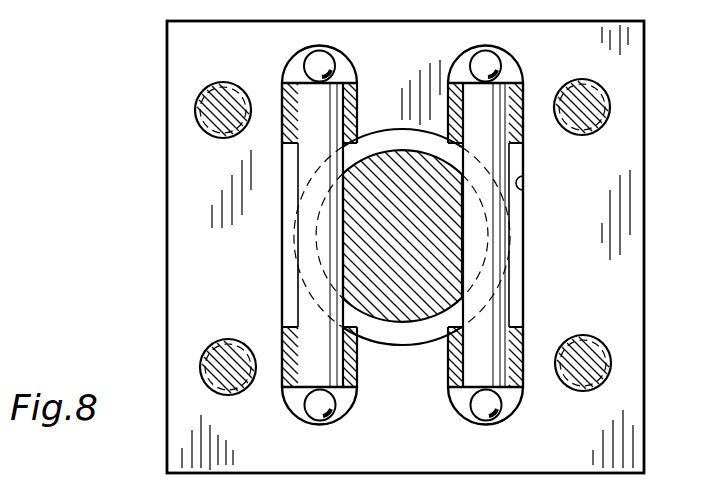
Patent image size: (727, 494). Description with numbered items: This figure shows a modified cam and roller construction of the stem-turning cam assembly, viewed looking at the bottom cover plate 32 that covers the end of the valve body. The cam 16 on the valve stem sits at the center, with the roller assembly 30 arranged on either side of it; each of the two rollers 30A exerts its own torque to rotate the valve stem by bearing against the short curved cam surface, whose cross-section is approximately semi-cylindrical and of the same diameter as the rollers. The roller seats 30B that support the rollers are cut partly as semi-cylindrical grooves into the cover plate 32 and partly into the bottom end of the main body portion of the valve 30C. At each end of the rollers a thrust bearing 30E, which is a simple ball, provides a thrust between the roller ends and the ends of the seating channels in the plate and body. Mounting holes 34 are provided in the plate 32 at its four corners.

The cam disk 16 is at (415, 217).
The cam follower assembly 30 is at (458, 226).
The follower rod 30A is at (498, 312).
The bushing 30B is at (515, 127).
The main body portion of the valve 30C is at (524, 190).
The thrust bearing 30E is at (317, 63).
The cover plate 32 is at (644, 53).
The mounting hole 34 is at (598, 105).